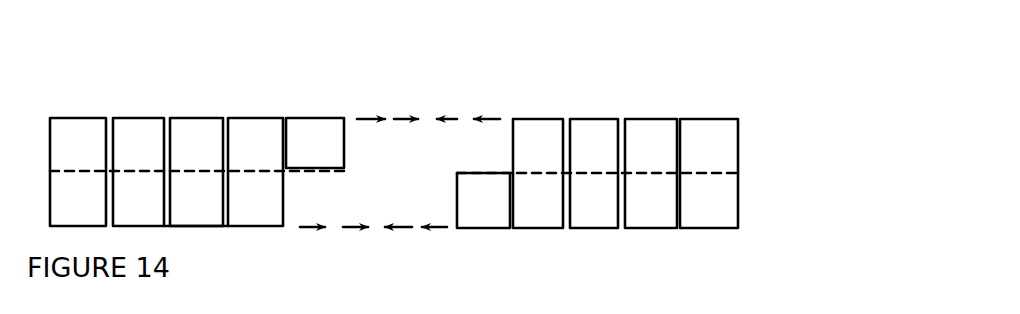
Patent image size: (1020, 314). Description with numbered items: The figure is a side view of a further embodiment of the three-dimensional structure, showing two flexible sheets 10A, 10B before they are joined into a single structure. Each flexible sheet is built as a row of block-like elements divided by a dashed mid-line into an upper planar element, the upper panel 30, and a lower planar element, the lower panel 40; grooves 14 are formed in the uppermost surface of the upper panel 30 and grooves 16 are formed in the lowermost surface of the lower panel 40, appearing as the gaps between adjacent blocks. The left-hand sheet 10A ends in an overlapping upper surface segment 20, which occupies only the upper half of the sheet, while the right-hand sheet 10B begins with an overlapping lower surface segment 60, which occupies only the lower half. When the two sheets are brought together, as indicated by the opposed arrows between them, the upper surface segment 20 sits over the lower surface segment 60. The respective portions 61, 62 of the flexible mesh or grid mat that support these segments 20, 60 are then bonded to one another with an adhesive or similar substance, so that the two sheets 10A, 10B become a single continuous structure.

The flexible sheet 10A is at (409, 129).
The flexible sheet 10B is at (597, 163).
The groove 14 is at (226, 118).
The groove 16 is at (170, 232).
The upper surface segment 20 is at (311, 117).
The upper panel 30 is at (745, 146).
The lower panel 40 is at (745, 202).
The lower surface segment 60 is at (475, 229).
The portion of the flexible mesh or grid mat 61 is at (311, 172).
The portion of the flexible mesh or grid mat 62 is at (481, 171).